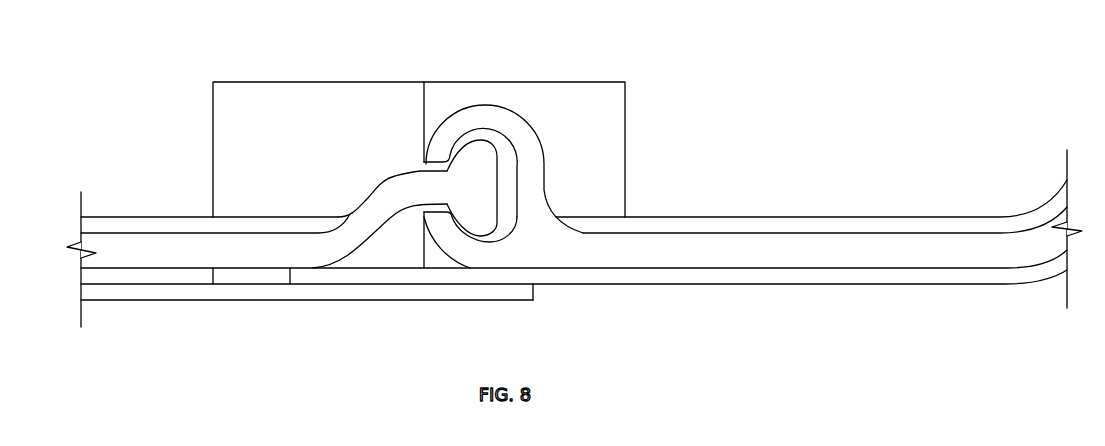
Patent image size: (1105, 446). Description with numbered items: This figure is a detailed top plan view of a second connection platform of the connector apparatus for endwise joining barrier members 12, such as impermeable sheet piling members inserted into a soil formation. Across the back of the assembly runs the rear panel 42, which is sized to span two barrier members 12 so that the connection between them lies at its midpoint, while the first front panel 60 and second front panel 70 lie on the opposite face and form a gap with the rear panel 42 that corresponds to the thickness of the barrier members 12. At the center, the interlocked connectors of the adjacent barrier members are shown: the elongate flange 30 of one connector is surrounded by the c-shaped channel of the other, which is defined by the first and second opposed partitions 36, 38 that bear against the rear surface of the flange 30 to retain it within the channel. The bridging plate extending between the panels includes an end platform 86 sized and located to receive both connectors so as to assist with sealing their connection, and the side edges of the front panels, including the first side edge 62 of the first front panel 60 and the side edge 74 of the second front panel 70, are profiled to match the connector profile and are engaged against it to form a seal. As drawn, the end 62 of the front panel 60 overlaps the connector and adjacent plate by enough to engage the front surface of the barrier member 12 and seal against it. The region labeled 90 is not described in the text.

The barrier member 12 is at (123, 250).
The rear panel 42 is at (166, 216).
The elongate flange 30 is at (480, 185).
The second partition 38 is at (468, 120).
The first partition 36 is at (458, 247).
The first block 90 is at (310, 108).
The end platform 86 is at (583, 108).
The second front panel 70 is at (143, 293).
The first side edge 62 is at (288, 275).
The second side edge 74 is at (537, 290).
The first front panel 60 is at (797, 285).